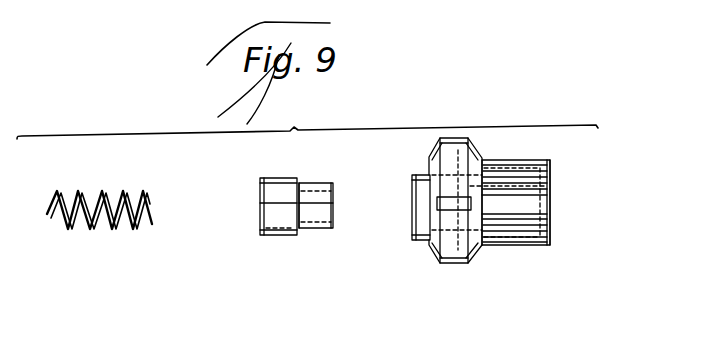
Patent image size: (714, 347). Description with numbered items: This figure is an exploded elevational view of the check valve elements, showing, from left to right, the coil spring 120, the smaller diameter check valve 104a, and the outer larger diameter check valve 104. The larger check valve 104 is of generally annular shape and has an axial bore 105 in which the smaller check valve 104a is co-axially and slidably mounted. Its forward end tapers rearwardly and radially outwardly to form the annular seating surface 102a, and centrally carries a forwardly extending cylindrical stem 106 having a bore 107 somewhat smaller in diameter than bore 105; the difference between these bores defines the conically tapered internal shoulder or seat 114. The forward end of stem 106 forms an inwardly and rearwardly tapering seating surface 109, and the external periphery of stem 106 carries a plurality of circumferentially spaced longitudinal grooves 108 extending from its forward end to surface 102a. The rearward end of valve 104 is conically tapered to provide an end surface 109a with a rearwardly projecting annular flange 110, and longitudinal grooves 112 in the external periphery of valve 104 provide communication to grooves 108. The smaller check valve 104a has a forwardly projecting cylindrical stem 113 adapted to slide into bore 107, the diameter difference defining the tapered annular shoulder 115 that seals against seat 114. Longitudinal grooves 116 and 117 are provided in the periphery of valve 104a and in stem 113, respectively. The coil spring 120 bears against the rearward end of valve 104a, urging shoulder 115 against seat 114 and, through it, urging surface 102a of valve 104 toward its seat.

The coil spring 120 is at (97, 228).
The smaller diameter check valve 104a is at (289, 210).
The longitudinal grooves 116 is at (278, 204).
The cylindrical stem 113 is at (334, 196).
The longitudinal grooves 117 is at (322, 208).
The annular shoulder 115 is at (299, 236).
The outer larger diameter check valve 104 is at (485, 222).
The end surface 109a is at (440, 141).
The longitudinal grooves 112 is at (437, 202).
The axial bore 105 is at (410, 220).
The annular flange 110 is at (422, 248).
The annular seating surface 102a is at (477, 252).
The internal annular shoulder or seat 114 is at (482, 160).
The longitudinal grooves 108 is at (541, 208).
The cylindrical stem 106 is at (551, 175).
The bore 107 is at (545, 186).
The seating surface 109 is at (551, 226).